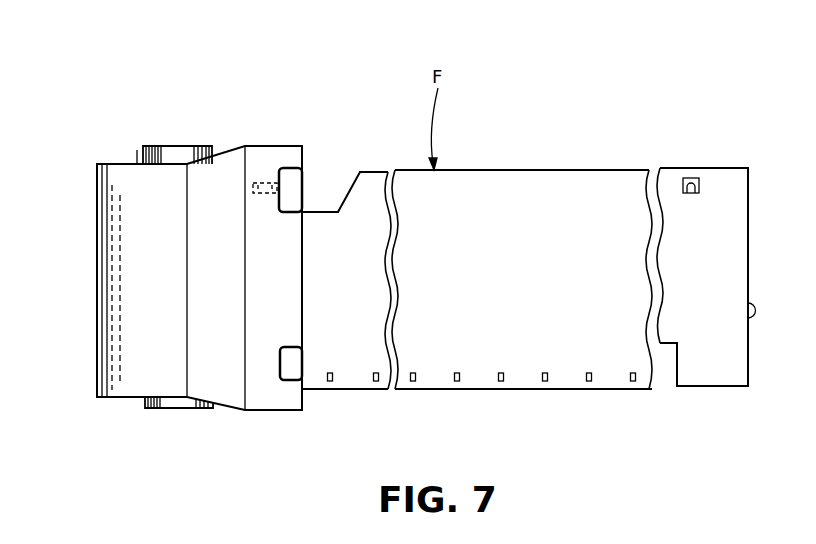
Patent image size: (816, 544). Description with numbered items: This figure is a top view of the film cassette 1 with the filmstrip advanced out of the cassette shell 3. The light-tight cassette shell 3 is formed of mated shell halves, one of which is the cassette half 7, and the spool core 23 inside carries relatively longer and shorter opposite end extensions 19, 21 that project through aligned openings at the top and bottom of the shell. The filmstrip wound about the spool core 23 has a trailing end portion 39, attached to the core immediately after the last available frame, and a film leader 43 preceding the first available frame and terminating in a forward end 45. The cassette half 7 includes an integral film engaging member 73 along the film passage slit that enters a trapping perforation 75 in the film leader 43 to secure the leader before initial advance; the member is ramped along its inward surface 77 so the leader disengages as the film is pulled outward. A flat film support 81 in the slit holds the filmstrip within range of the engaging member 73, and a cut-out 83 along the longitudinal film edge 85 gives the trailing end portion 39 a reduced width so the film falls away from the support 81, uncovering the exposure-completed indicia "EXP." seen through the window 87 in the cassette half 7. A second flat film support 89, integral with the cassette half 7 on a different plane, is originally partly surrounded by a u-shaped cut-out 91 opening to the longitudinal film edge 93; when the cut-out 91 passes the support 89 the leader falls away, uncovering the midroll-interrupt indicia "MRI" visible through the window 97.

The film cassette 1 is at (228, 140).
The cassette shell 3 is at (97, 204).
The shell half 7 is at (97, 230).
The longer end extension 19 is at (167, 145).
The shorter end extension 21 is at (170, 410).
The spool core 23 is at (141, 161).
The trailing end portion 39 is at (360, 324).
The film leader 43 is at (705, 290).
The forward end 45 is at (745, 306).
The film engaging member 73 is at (268, 183).
The trapping perforation 75 is at (691, 194).
The inward surface 77 is at (250, 200).
The film support 81 is at (305, 178).
The cut-out 83 is at (325, 212).
The longitudinal film edge 85 is at (376, 170).
The window 87 is at (288, 212).
The film support 89 is at (302, 352).
The u-shaped cut-out 91 is at (677, 370).
The longitudinal film edge 93 is at (362, 390).
The window 97 is at (284, 348).